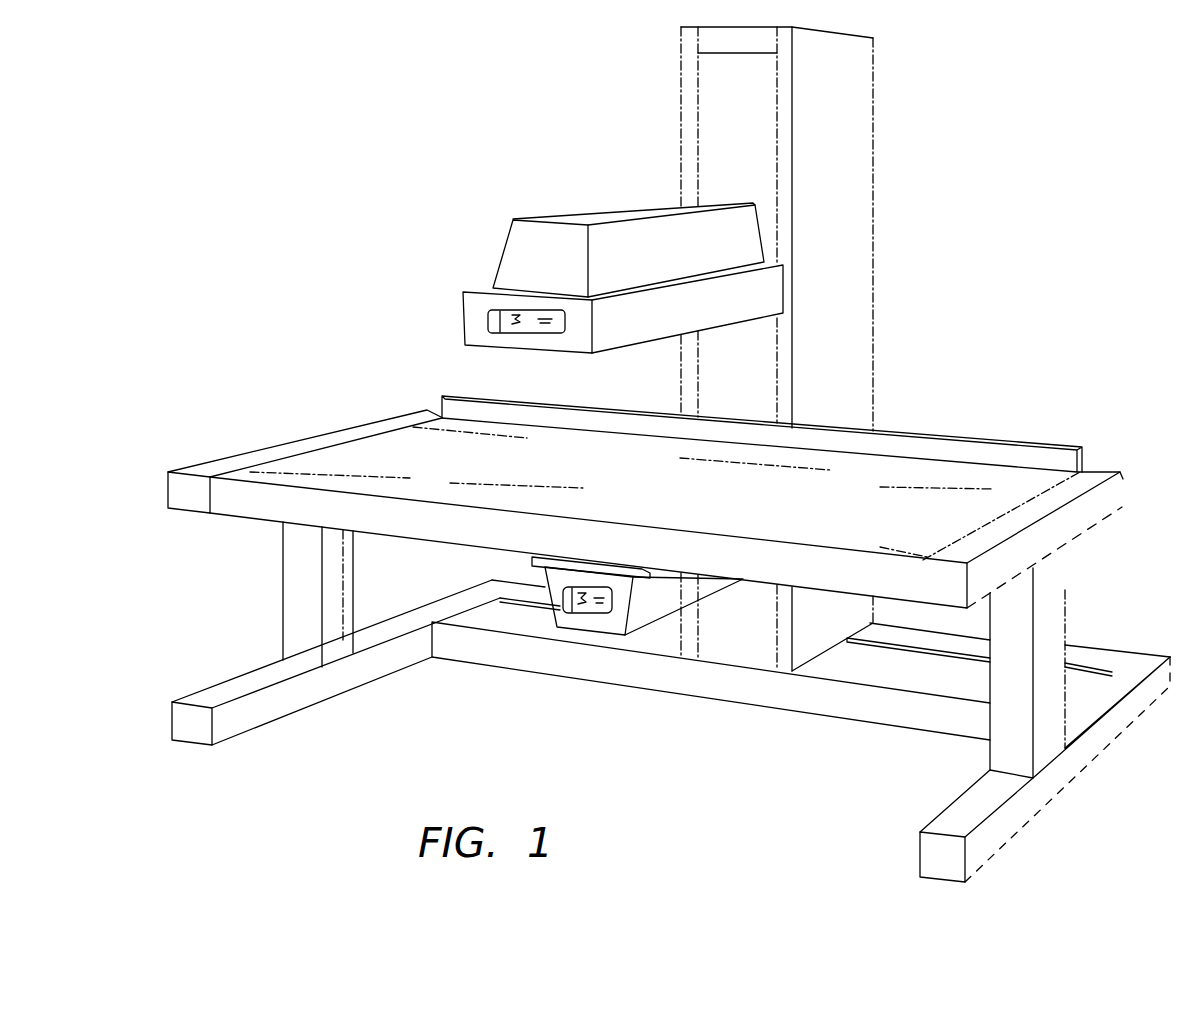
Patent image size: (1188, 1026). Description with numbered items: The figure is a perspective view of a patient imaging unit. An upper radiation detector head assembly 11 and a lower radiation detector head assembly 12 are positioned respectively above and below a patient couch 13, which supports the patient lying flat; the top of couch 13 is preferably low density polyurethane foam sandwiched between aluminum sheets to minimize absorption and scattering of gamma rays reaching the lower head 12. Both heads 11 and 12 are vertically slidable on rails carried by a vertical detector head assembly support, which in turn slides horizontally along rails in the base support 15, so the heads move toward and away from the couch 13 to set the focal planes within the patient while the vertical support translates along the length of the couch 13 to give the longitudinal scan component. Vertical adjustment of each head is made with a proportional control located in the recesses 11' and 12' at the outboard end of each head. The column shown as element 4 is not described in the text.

The vertical support column 4 is at (873, 210).
The upper radiation detector head assembly 11 is at (623, 265).
The recess 11' is at (491, 345).
The lower radiation detector head assembly 12 is at (596, 633).
The recess 12' is at (574, 648).
The patient couch 13 is at (623, 494).
The base support 15 is at (808, 694).